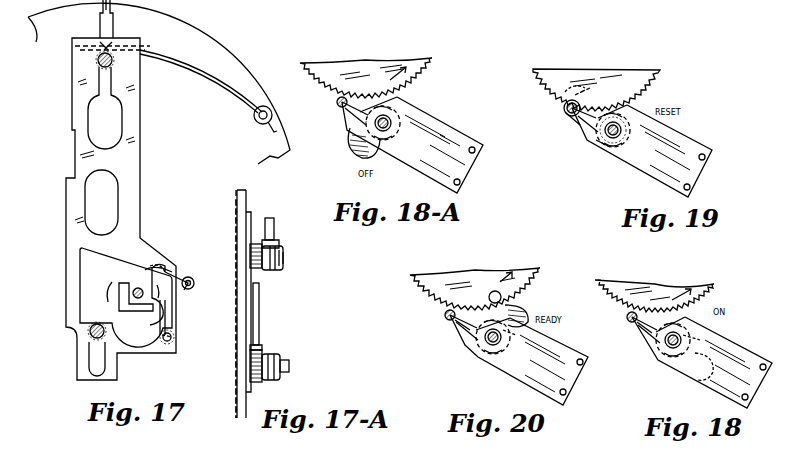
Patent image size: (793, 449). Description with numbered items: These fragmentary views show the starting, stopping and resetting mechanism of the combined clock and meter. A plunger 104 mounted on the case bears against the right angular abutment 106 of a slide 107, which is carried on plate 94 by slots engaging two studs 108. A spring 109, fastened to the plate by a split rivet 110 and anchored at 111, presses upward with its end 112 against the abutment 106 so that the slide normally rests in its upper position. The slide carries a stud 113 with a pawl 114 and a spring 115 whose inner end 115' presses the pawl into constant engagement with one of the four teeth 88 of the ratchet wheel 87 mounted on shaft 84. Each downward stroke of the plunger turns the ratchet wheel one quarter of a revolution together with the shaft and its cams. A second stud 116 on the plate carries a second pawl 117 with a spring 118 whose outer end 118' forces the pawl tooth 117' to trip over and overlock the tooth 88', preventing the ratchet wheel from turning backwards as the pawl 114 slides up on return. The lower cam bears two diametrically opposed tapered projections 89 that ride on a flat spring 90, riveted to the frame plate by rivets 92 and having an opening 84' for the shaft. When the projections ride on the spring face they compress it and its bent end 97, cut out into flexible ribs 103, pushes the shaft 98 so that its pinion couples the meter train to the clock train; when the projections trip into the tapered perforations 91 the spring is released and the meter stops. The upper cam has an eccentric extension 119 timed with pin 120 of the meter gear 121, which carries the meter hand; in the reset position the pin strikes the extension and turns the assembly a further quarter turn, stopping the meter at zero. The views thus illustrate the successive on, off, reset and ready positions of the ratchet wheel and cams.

In FIG. 17, the shaft 84 is at (113, 279).
In FIG. 18-A, the shaft 84 is at (354, 136).
In FIG. 20, the shaft 84 is at (468, 349).
In FIG. 18, the shaft 84 is at (656, 356).
In FIG. 20, the opening 84' is at (537, 330).
In FIG. 18, the opening 84' is at (726, 323).
In FIG. 17, the ratchet wheel 87 is at (120, 300).
In FIG. 17, the teeth 88 is at (144, 298).
In FIG. 17, the tooth 88' is at (187, 298).
In FIG. 18-A, the tapered projections 89 is at (390, 112).
In FIG. 19, the tapered projections 89 is at (640, 128).
In FIG. 20, the tapered projections 89 is at (488, 352).
In FIG. 18, the tapered projections 89 is at (685, 335).
In FIG. 18-A, the flat spring 90 is at (445, 140).
In FIG. 19, the flat spring 90 is at (645, 165).
In FIG. 20, the flat spring 90 is at (520, 375).
In FIG. 18, the flat spring 90 is at (705, 377).
In FIG. 18-A, the tapered perforations 91 is at (398, 99).
In FIG. 19, the tapered perforations 91 is at (630, 107).
In FIG. 20, the tapered perforations 91 is at (490, 358).
In FIG. 18, the tapered perforations 91 is at (688, 316).
In FIG. 18-A, the rivets 92 is at (462, 180).
In FIG. 19, the rivets 92 is at (692, 186).
In FIG. 20, the rivets 92 is at (581, 366).
In FIG. 18, the rivets 92 is at (749, 398).
In FIG. 17, the plate 94 is at (237, 200).
In FIG. 17-A, the plate 94 is at (237, 200).
In FIG. 18-A, the bent end 97 is at (337, 103).
In FIG. 20, the bent end 97 is at (445, 315).
In FIG. 18, the bent end 97 is at (627, 316).
In FIG. 19, the shaft 98 is at (572, 115).
In FIG. 20, the shaft 98 is at (455, 322).
In FIG. 18, the shaft 98 is at (637, 322).
In FIG. 18-A, the flexible joined ribs 103 is at (350, 112).
In FIG. 19, the flexible joined ribs 103 is at (588, 128).
In FIG. 20, the flexible joined ribs 103 is at (465, 330).
In FIG. 18, the flexible joined ribs 103 is at (648, 333).
In FIG. 17, the plunger 104 is at (113, 22).
In FIG. 17, the right angular abutment 106 is at (140, 44).
In FIG. 17, the slide 107 is at (134, 113).
In FIG. 17-A, the slide 107 is at (252, 388).
In FIG. 17, the studs 108 is at (98, 61).
In FIG. 17, the spring 109 is at (213, 77).
In FIG. 17, the split rivet 110 is at (254, 118).
In FIG. 17, the anchor 111 is at (270, 131).
In FIG. 17, the spring end 112 is at (74, 47).
In FIG. 17, the stud 113 is at (173, 340).
In FIG. 17-A, the stud 113 is at (290, 368).
In FIG. 17, the pawl 114 is at (166, 322).
In FIG. 17-A, the pawl 114 is at (259, 318).
In FIG. 17-A, the spring 115 is at (282, 359).
In FIG. 17, the inner end 115' is at (191, 333).
In FIG. 17-A, the inner end 115' is at (285, 335).
In FIG. 17, the second stud 116 is at (194, 285).
In FIG. 17-A, the second stud 116 is at (284, 259).
In FIG. 17, the second pawl 117 is at (176, 258).
In FIG. 17-A, the second pawl 117 is at (289, 229).
In FIG. 17, the tooth 117' is at (154, 249).
In FIG. 17-A, the spring 118 is at (281, 264).
In FIG. 17, the outer end 118' is at (195, 275).
In FIG. 17-A, the outer end 118' is at (291, 242).
In FIG. 18-A, the eccentric extension 119 is at (356, 152).
In FIG. 19, the eccentric extension 119 is at (618, 88).
In FIG. 20, the eccentric extension 119 is at (525, 308).
In FIG. 18, the eccentric extension 119 is at (714, 365).
In FIG. 19, the pin 120 is at (564, 108).
In FIG. 20, the pin 120 is at (498, 291).
In FIG. 18-A, the meter gear 121 is at (370, 55).
In FIG. 19, the meter gear 121 is at (580, 70).
In FIG. 20, the meter gear 121 is at (472, 270).
In FIG. 18, the meter gear 121 is at (668, 282).